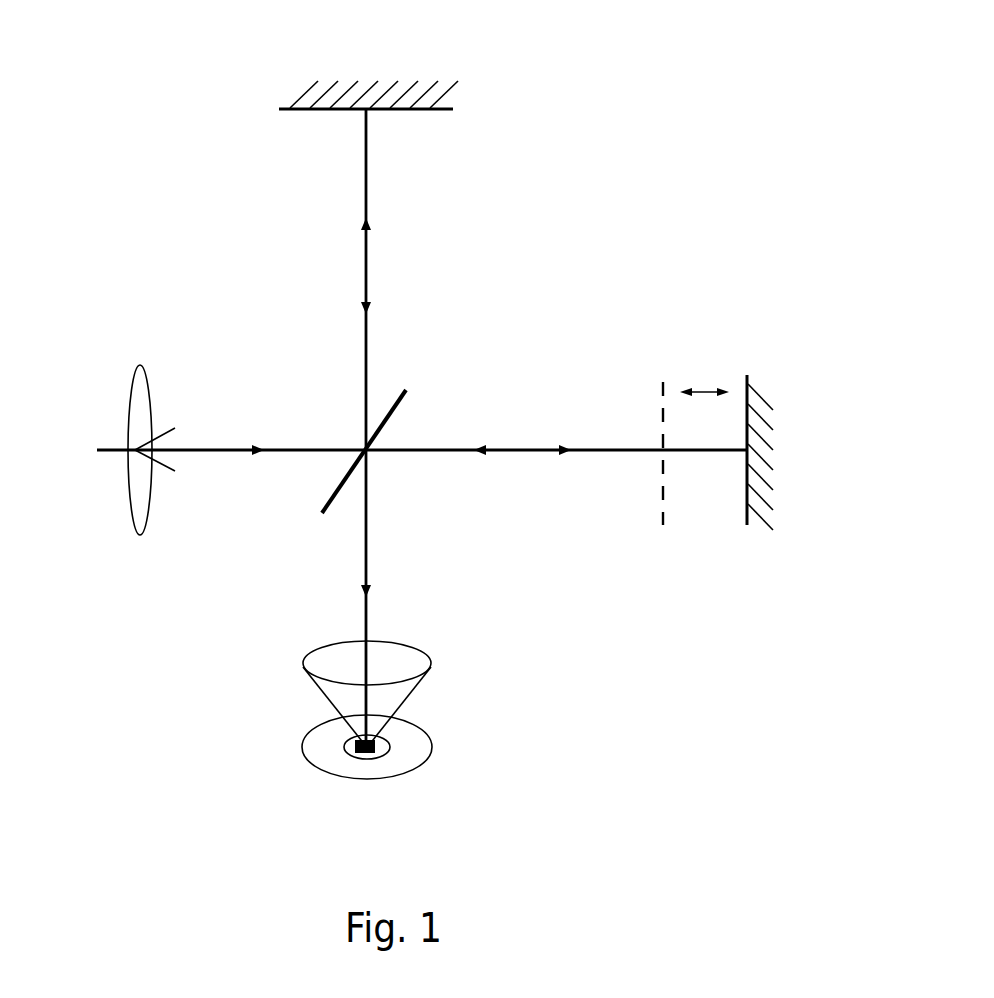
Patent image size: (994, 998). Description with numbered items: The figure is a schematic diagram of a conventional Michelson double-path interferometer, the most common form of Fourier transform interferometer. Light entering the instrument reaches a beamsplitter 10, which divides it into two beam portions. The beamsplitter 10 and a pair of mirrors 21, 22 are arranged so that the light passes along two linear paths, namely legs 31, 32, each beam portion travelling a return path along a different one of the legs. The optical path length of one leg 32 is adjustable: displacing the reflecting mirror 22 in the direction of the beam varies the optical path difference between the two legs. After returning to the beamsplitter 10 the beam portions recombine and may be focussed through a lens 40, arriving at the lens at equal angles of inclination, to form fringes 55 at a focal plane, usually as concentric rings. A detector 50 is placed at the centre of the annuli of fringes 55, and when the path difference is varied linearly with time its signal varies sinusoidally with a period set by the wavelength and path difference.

The beamsplitter 10 is at (395, 396).
The mirror 21 is at (413, 105).
The mirror 22 is at (745, 507).
The leg 31 is at (362, 252).
The leg 32 is at (510, 452).
The lens 40 is at (305, 658).
The detector 50 is at (345, 745).
The fringes 55 is at (420, 765).